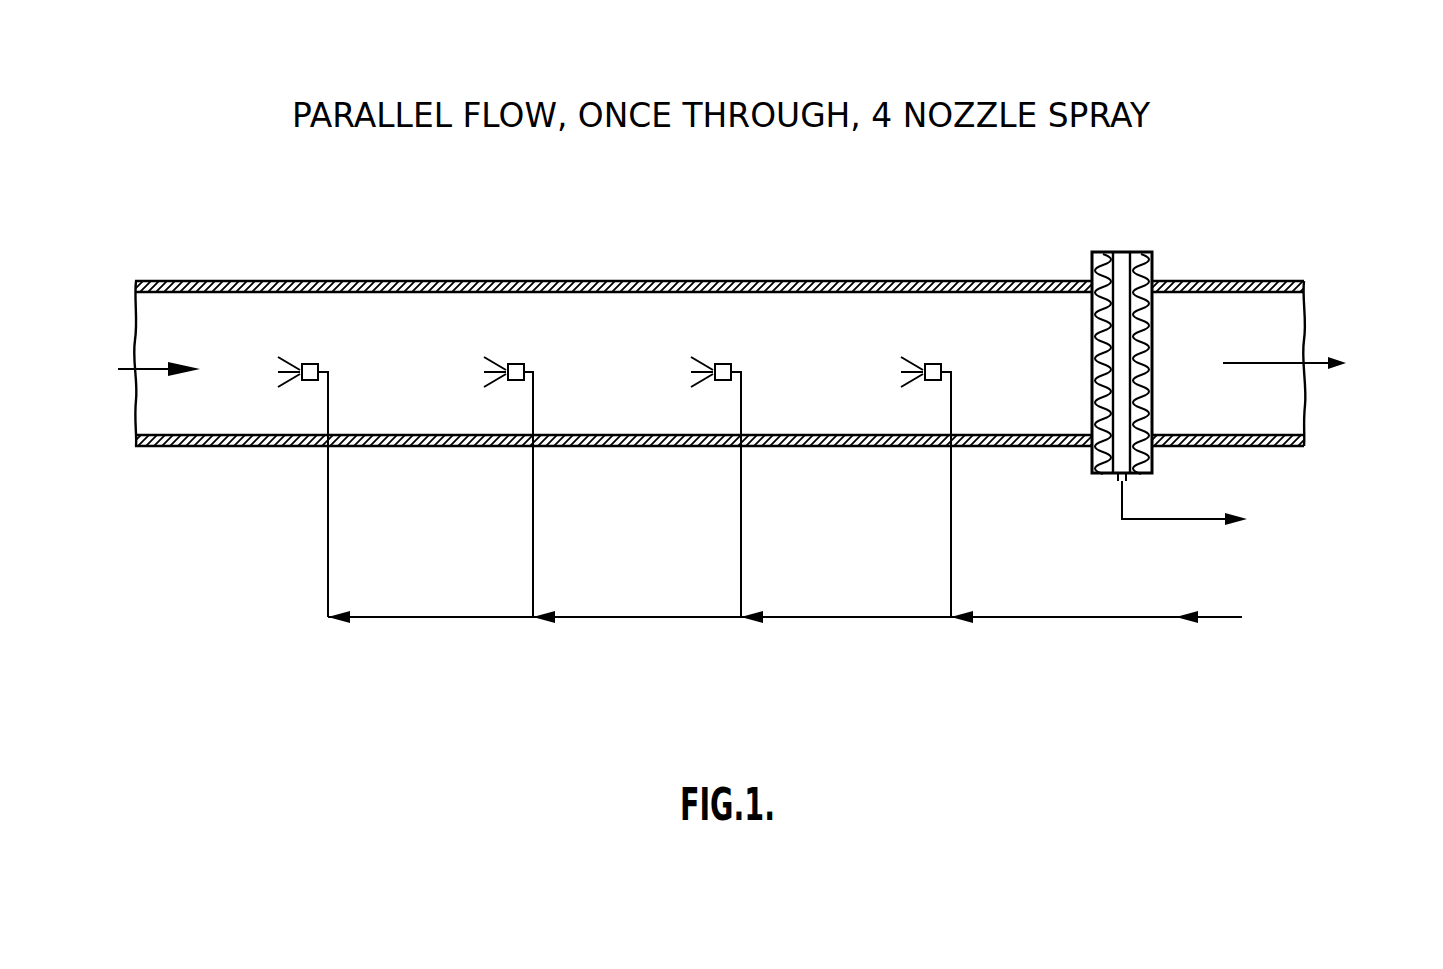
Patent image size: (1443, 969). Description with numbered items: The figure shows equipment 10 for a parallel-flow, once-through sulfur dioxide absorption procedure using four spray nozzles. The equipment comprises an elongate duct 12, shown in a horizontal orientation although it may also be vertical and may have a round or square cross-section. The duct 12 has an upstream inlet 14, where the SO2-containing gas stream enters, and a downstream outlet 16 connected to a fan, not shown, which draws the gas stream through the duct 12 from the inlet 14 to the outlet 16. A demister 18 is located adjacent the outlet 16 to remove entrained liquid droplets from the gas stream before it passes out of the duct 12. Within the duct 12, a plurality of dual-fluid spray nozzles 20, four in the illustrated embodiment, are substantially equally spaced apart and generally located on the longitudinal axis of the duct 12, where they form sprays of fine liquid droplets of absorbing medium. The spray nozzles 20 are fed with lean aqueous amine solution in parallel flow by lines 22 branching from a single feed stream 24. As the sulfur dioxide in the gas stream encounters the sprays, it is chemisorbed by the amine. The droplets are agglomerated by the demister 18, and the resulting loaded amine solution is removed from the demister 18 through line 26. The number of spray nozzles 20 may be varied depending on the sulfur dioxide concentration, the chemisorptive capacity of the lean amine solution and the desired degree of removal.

The equipment 10 is at (1340, 160).
The elongate duct 12 is at (497, 281).
The upstream inlet 14 is at (140, 281).
The downstream outlet 16 is at (1276, 281).
The demister 18 is at (1152, 258).
The dual-fluid spray nozzles 20 is at (312, 365).
The lines 22 is at (328, 529).
The single feed stream 24 is at (1065, 618).
The line 26 is at (1170, 519).